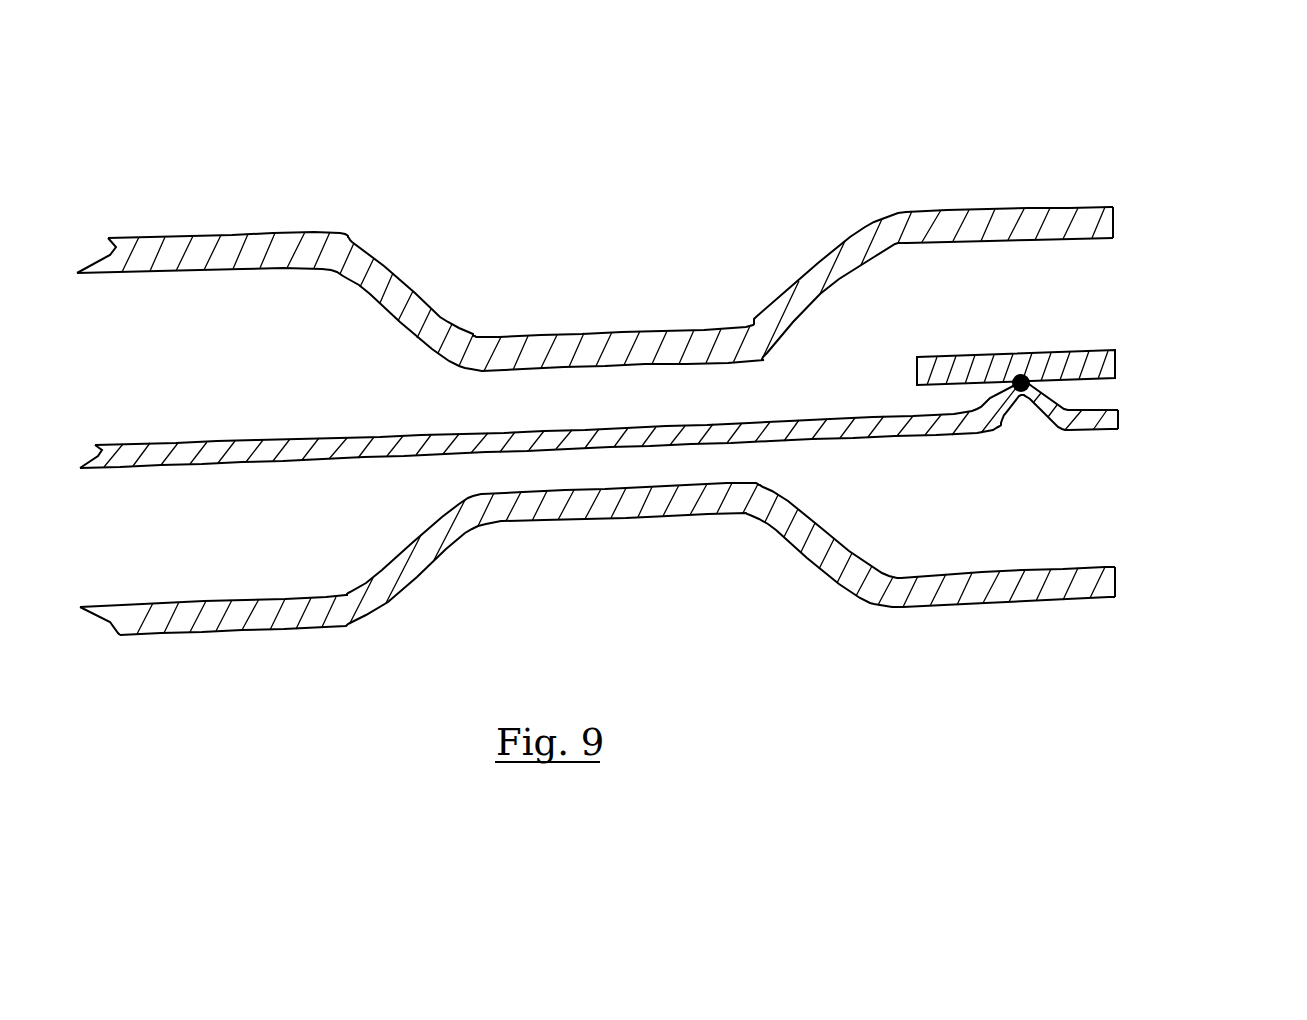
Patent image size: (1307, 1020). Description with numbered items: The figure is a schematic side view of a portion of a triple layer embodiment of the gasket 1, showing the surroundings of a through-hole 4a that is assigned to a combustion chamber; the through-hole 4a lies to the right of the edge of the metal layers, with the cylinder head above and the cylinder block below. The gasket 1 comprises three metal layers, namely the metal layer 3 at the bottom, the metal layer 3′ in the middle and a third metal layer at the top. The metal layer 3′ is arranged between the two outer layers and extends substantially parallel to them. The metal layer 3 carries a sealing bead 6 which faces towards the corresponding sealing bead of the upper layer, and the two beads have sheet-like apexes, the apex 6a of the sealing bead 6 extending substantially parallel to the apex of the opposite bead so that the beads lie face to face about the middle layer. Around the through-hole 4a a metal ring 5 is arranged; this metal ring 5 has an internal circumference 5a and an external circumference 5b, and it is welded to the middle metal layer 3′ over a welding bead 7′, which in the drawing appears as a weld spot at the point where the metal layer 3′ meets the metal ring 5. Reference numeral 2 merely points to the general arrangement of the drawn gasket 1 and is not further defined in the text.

The gasket 1 is at (176, 113).
The upper cover sheet 2 is at (242, 103).
The metal layer 3 is at (152, 630).
The metal layer 3′ is at (152, 448).
The through-hole 4a is at (1278, 474).
The metal ring 5 is at (988, 362).
The internal circumference 5a is at (1127, 353).
The external circumference 5b is at (908, 366).
The sealing bead 6 is at (688, 605).
The apex 6a is at (592, 512).
The welding bead 7′ is at (1020, 405).